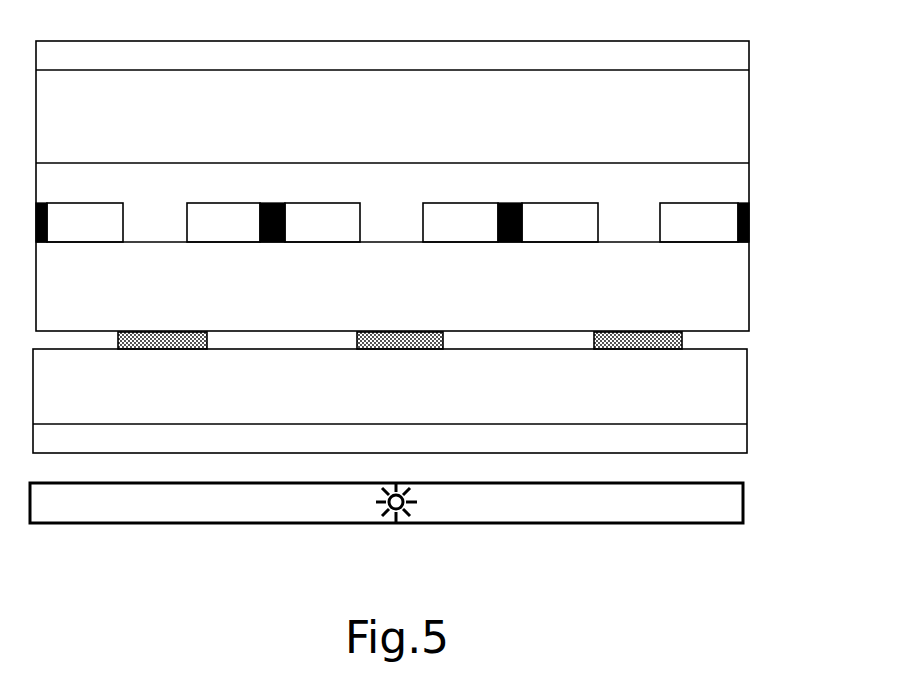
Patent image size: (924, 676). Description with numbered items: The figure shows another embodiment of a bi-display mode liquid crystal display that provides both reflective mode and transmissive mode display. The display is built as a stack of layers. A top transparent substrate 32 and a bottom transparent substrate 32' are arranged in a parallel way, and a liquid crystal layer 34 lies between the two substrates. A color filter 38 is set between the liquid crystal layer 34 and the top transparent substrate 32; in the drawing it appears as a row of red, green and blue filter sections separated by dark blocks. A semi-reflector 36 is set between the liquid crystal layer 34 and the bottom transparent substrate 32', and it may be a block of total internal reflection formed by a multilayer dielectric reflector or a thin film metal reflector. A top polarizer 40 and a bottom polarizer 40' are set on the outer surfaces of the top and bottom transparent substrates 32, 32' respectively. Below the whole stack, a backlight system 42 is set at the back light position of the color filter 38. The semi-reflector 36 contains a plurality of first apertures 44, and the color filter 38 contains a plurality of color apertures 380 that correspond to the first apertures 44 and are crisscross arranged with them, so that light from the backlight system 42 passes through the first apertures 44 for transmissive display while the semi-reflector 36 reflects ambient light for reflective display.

The top polarizer 40 is at (441, 52).
The top transparent substrate 32 is at (441, 130).
The color aperture 380 is at (150, 211).
The color filter 38 is at (749, 228).
The liquid crystal layer 34 is at (725, 315).
The semi-reflector 36 is at (160, 341).
The first aperture 44 is at (298, 339).
The bottom transparent substrate 32' is at (443, 386).
The bottom polarizer 40' is at (443, 431).
The backlight system 42 is at (725, 518).